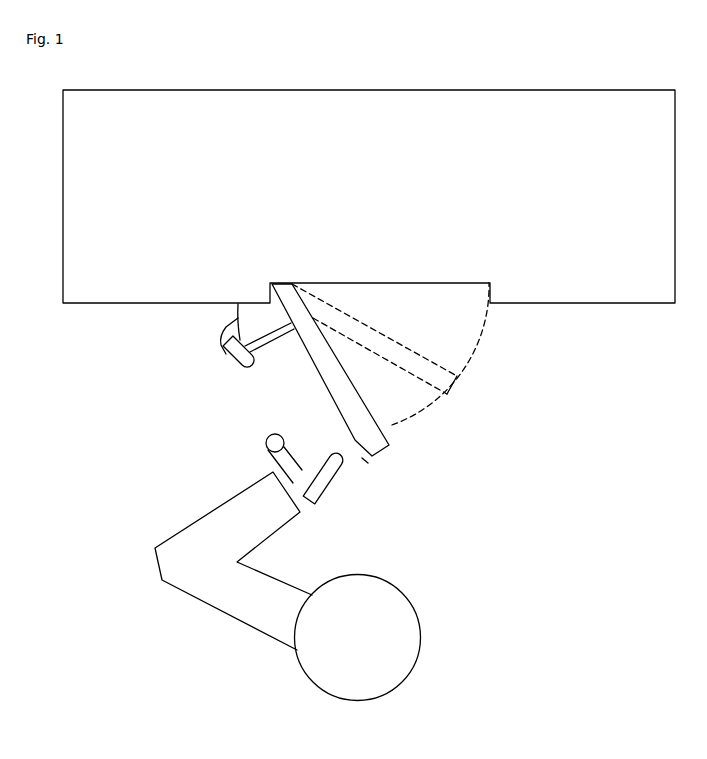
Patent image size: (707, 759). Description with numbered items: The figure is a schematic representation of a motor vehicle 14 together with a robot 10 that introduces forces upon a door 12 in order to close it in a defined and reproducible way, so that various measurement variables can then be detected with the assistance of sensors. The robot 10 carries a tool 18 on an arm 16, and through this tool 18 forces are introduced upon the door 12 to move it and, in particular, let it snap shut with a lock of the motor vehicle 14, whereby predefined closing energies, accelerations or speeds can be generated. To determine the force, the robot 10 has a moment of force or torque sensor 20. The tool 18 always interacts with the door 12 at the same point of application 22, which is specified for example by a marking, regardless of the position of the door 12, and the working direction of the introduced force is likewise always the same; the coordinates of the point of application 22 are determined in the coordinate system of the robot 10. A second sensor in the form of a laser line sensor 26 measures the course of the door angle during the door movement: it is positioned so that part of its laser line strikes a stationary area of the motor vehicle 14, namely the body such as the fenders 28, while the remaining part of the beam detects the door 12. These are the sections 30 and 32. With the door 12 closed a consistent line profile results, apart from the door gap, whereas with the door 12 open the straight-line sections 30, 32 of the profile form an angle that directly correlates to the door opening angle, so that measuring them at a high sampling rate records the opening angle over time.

The robot 10 is at (458, 645).
The door 12 is at (355, 382).
The motor vehicle 14 is at (82, 305).
The arm 16 is at (218, 498).
The tool 18 is at (338, 476).
The torque sensor 20 is at (300, 457).
The point of application 22 is at (368, 463).
The laser line sensor 26 is at (238, 352).
The fenders 28 is at (217, 311).
The section 30 is at (221, 348).
The section 32 is at (268, 338).